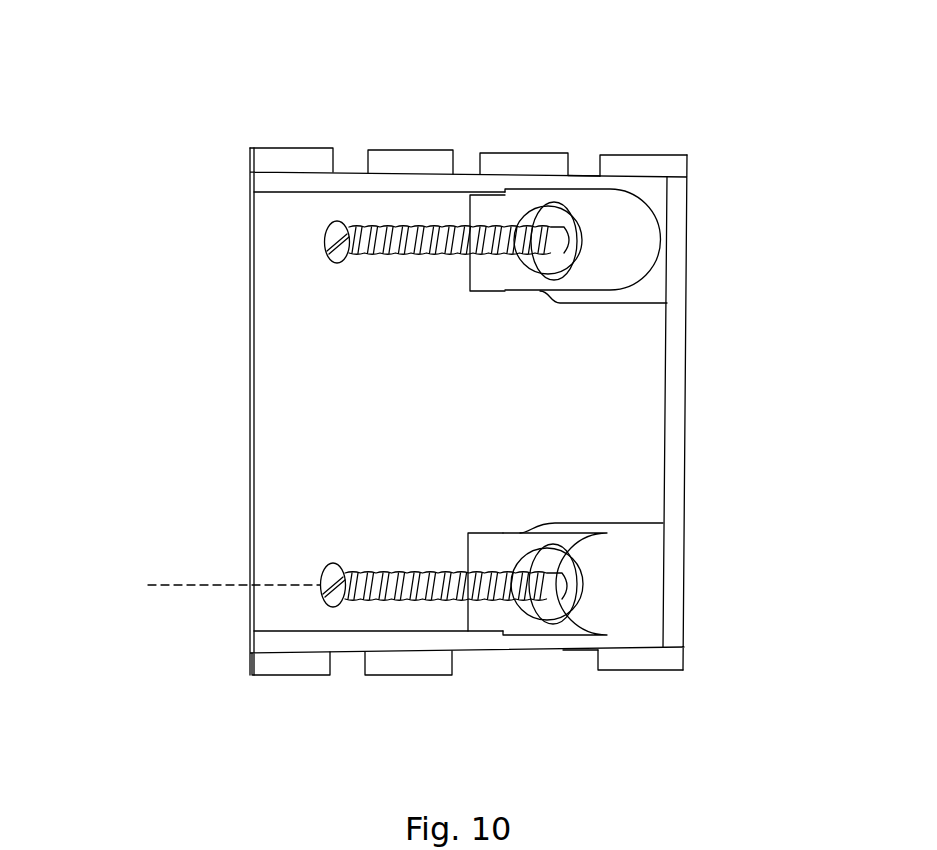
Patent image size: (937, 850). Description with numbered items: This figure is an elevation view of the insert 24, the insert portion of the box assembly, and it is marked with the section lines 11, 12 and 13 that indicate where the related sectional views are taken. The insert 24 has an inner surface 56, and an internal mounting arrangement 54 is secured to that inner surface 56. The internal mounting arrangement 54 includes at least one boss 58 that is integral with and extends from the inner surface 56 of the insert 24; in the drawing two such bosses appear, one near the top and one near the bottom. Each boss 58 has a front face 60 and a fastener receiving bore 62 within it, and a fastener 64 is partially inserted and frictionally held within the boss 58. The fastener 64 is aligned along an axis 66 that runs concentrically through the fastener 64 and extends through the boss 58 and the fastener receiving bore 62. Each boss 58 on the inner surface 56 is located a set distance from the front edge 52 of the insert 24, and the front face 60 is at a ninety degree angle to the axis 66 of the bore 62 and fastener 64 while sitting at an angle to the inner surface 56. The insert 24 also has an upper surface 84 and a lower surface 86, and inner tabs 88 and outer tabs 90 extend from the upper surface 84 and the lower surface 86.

The section line 11- 11 is at (799, 95).
The section line 12- 12 is at (756, 288).
The section line 13- 13 is at (178, 713).
The insert 24 is at (642, 703).
The front edge 52 is at (250, 410).
The internal mounting arrangement 54 is at (447, 291).
The inner surface 56 is at (450, 420).
The boss 58 is at (626, 226).
The front face 60 is at (498, 215).
The fastener receiving bore 62 is at (548, 545).
The fastener 64 is at (405, 575).
The axis 66 is at (283, 585).
The upper surface 84 is at (585, 177).
The lower surface 86 is at (580, 650).
The inner tabs 88 is at (305, 748).
The outer tabs 90 is at (420, 745).